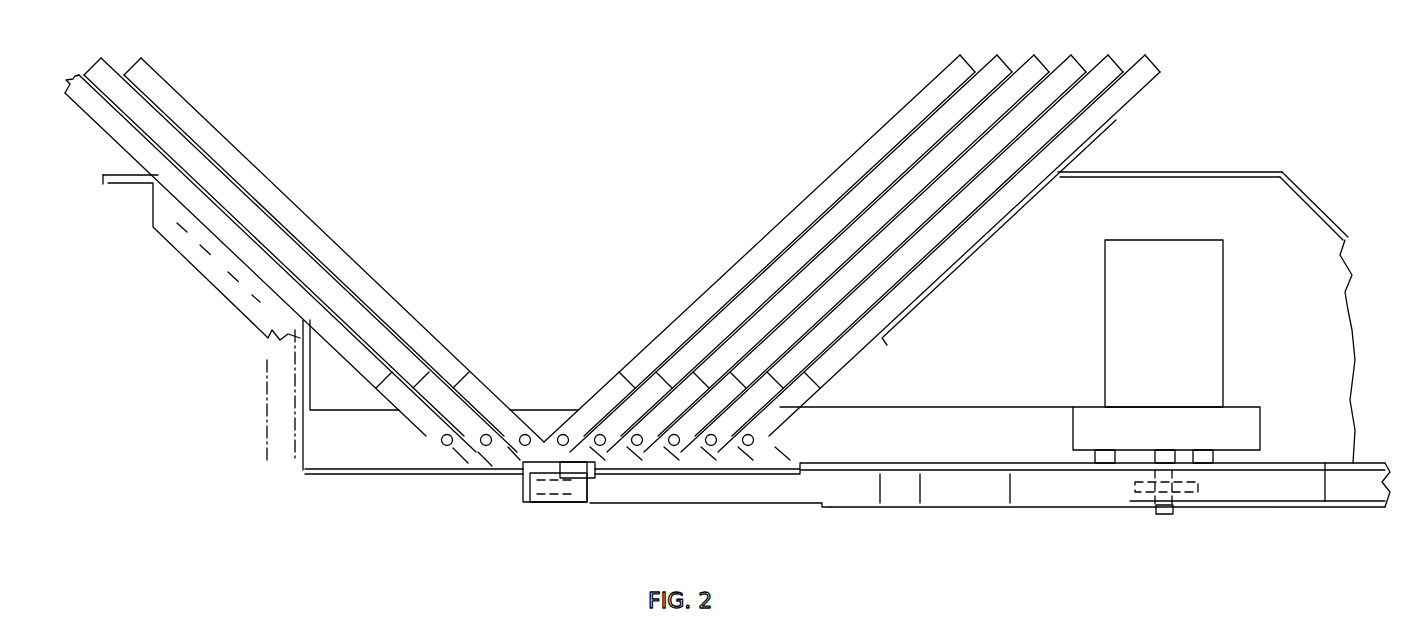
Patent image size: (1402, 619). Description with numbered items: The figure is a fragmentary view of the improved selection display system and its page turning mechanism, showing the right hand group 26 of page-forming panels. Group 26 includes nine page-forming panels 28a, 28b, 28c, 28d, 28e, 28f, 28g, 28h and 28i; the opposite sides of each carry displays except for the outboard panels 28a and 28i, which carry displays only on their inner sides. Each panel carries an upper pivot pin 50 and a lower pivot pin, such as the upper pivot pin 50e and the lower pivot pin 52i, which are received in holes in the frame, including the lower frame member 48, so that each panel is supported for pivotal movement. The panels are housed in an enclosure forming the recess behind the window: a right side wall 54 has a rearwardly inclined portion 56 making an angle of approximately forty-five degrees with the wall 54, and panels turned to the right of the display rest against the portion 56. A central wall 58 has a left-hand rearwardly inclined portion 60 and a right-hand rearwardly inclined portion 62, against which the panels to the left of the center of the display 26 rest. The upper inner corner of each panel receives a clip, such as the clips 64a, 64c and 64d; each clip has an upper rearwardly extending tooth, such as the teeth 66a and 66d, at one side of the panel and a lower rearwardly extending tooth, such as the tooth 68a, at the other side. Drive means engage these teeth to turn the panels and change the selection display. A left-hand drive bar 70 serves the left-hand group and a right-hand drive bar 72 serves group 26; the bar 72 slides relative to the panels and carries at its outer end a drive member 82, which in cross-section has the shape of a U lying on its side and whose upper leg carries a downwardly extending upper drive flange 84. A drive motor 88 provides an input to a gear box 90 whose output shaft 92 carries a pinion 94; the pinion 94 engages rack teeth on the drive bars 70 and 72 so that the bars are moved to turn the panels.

The right hand group 26 is at (572, 205).
The page-forming panel 28a is at (137, 140).
The page-forming panel 28b is at (150, 92).
The page-forming panel 28c is at (214, 136).
The page-forming panel 28d is at (707, 298).
The page-forming panel 28e is at (776, 262).
The page-forming panel 28f is at (820, 255).
The page-forming panel 28g is at (797, 337).
The page-forming panel 28h is at (1105, 80).
The page-forming panel 28i is at (1086, 137).
The lower frame member 48 is at (910, 424).
The upper pivot pin 50 is at (440, 443).
The upper pivot pin 50e is at (608, 452).
The lower pivot pin 52i is at (755, 440).
The right side wall 54 is at (306, 388).
The rearwardly inclined portion 56 is at (207, 232).
The central wall 58 is at (1237, 153).
The left-hand rearwardly inclined portion 60 is at (1303, 188).
The right-hand rearwardly inclined portion 62 is at (932, 293).
The clip 64a is at (425, 408).
The clip 64c is at (540, 384).
The clip 64d is at (620, 392).
The upper rearwardly extending tooth 66a is at (447, 453).
The upper rearwardly extending tooth 66d is at (566, 420).
The lower rearwardly extending tooth 68a is at (472, 455).
The left-hand drive bar 70 is at (1297, 487).
The right-hand drive bar 72 is at (863, 493).
The drive member 82 is at (565, 496).
The upper drive flange 84 is at (583, 480).
The drive motor 88 is at (1212, 252).
The gear box 90 is at (1233, 420).
The output shaft 92 is at (1166, 512).
The pinion 94 is at (1200, 488).